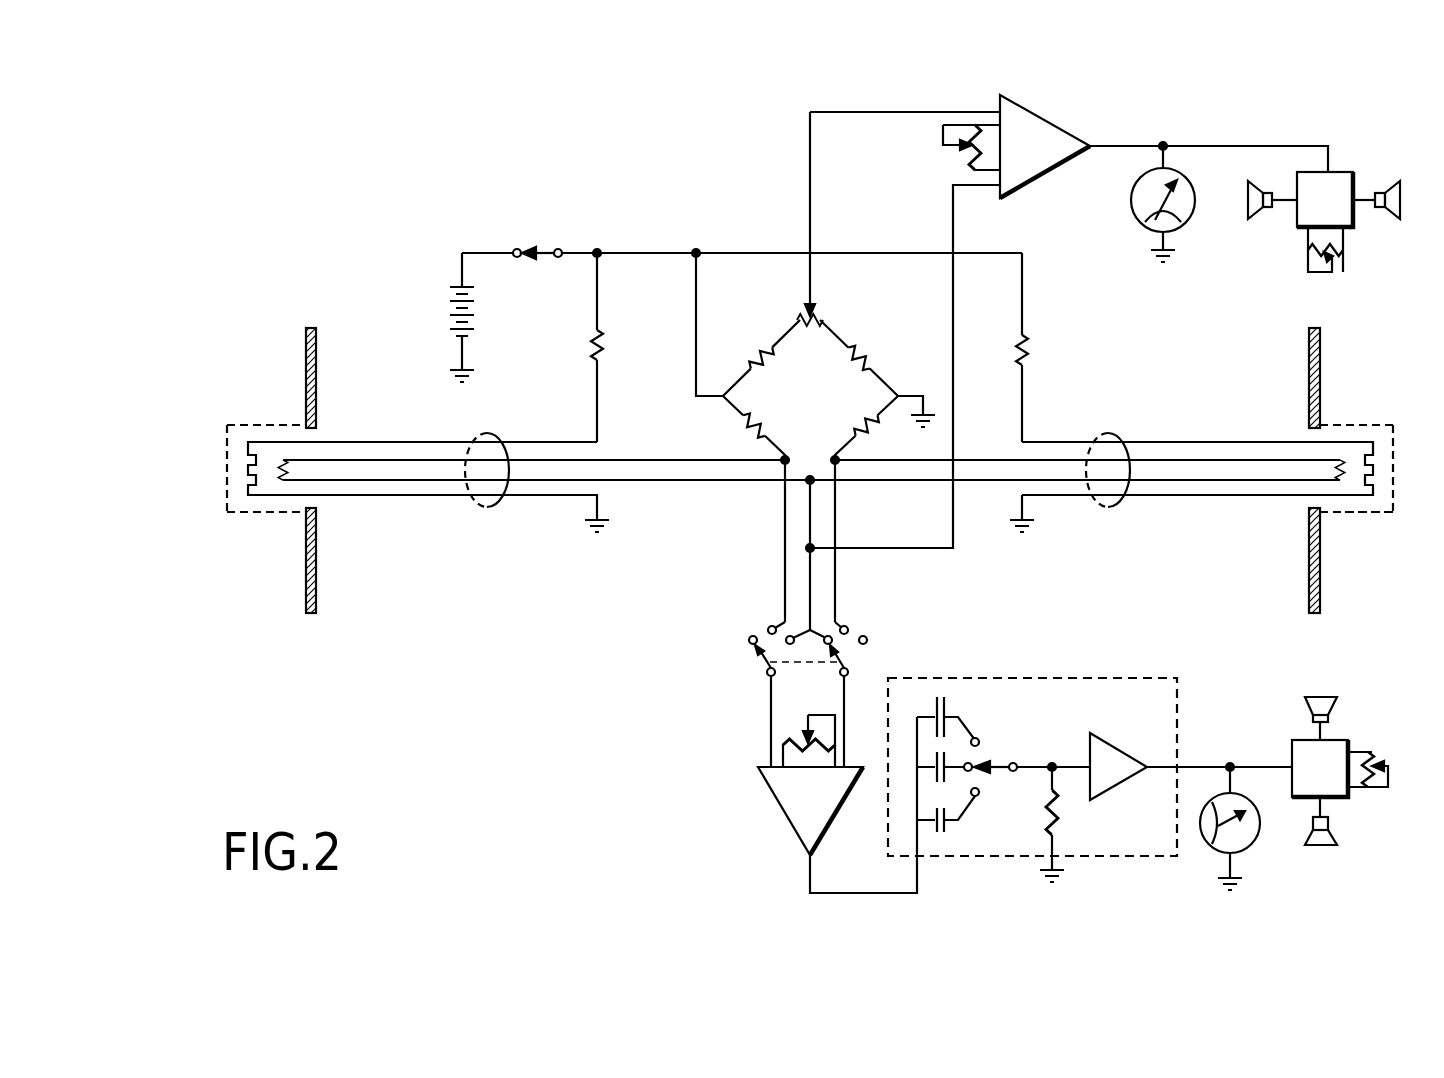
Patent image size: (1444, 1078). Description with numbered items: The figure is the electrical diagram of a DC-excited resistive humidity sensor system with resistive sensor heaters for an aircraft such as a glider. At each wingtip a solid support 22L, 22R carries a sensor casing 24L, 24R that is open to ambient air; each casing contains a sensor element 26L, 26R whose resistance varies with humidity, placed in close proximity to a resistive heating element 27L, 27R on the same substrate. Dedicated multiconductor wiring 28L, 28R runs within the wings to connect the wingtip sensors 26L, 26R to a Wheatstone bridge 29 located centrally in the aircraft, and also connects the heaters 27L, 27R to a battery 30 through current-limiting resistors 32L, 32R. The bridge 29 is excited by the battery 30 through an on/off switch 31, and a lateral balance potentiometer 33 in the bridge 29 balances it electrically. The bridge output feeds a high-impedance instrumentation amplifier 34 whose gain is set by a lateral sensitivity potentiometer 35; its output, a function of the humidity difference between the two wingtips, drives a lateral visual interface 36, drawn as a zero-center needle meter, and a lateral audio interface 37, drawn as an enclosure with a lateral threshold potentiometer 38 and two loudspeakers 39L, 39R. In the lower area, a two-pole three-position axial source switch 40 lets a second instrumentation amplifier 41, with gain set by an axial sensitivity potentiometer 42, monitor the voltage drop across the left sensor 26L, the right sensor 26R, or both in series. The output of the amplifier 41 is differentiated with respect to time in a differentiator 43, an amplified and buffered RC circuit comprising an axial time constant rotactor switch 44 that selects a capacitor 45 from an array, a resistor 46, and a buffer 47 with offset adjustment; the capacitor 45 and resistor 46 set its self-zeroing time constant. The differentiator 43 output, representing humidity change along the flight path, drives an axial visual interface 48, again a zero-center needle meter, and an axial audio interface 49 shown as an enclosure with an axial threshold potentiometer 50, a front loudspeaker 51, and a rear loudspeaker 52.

The solid support 22L is at (316, 538).
The solid support 22R is at (1307, 537).
The sensor casing 24L is at (262, 513).
The sensor casing 24R is at (1367, 513).
The sensor element 26L is at (279, 457).
The sensor element 26R is at (1345, 457).
The resistive heating element 27L is at (250, 443).
The resistive heating element 27R is at (1372, 443).
The multiconductor wiring 28L is at (485, 507).
The multiconductor wiring 28R is at (1108, 508).
The Wheatstone bridge 29 is at (810, 390).
The battery 30 is at (445, 308).
The on/off switch 31 is at (543, 252).
The current-limiting resistor 32L is at (592, 347).
The current-limiting resistor 32R is at (1030, 345).
The lateral balance potentiometer 33 is at (825, 320).
The instrumentation amplifier 34 is at (1053, 123).
The lateral sensitivity potentiometer 35 is at (958, 147).
The lateral visual interface 36 is at (1130, 215).
The lateral audio interface 37 is at (1338, 170).
The lateral threshold potentiometer 38 is at (1312, 273).
The loudspeaker 39L is at (1258, 215).
The loudspeaker 39R is at (1396, 216).
The two-pole three-position switch 40 is at (762, 660).
The instrumentation amplifier 41 is at (787, 823).
The axial sensitivity potentiometer 42 is at (782, 747).
The differentiator 43 is at (963, 677).
The axial time constant rotactor switch 44 is at (998, 763).
The capacitor 45 is at (945, 773).
The resistor 46 is at (1060, 798).
The buffer 47 is at (1118, 745).
The axial visual interface 48 is at (1250, 847).
The axial audio interface 49 is at (1290, 753).
The axial threshold potentiometer 50 is at (1382, 788).
The front loudspeaker 51 is at (1323, 693).
The rear loudspeaker 52 is at (1323, 845).